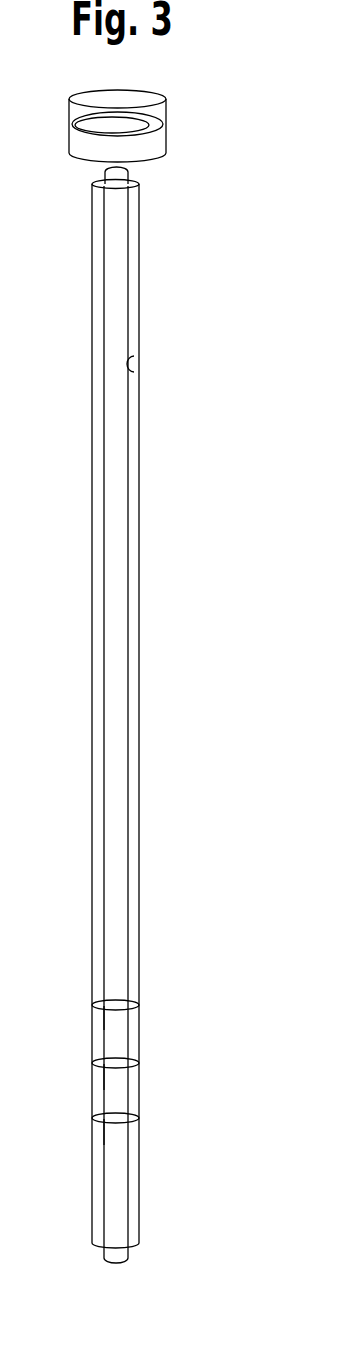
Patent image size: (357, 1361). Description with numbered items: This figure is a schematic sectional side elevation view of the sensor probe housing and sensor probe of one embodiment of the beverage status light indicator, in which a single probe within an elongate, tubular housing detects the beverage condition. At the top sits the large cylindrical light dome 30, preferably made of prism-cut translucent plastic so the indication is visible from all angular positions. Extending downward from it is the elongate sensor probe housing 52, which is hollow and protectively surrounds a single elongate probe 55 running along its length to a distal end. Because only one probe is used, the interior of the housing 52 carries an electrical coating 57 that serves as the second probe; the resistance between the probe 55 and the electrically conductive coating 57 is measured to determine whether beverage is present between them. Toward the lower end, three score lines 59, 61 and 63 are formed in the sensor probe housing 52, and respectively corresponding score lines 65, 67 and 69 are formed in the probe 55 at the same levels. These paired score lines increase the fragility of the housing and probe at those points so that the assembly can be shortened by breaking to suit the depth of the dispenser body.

The cylindrical light dome 30 is at (133, 93).
The elongate sensor probe housing 52 is at (139, 527).
The electrical coating 57 is at (136, 372).
The elongate probe 55 is at (122, 1265).
The score line 59 is at (130, 1001).
The score line 61 is at (128, 1058).
The score line 63 is at (129, 1113).
The score line 65 is at (116, 1010).
The score line 67 is at (114, 1067).
The score line 69 is at (114, 1122).